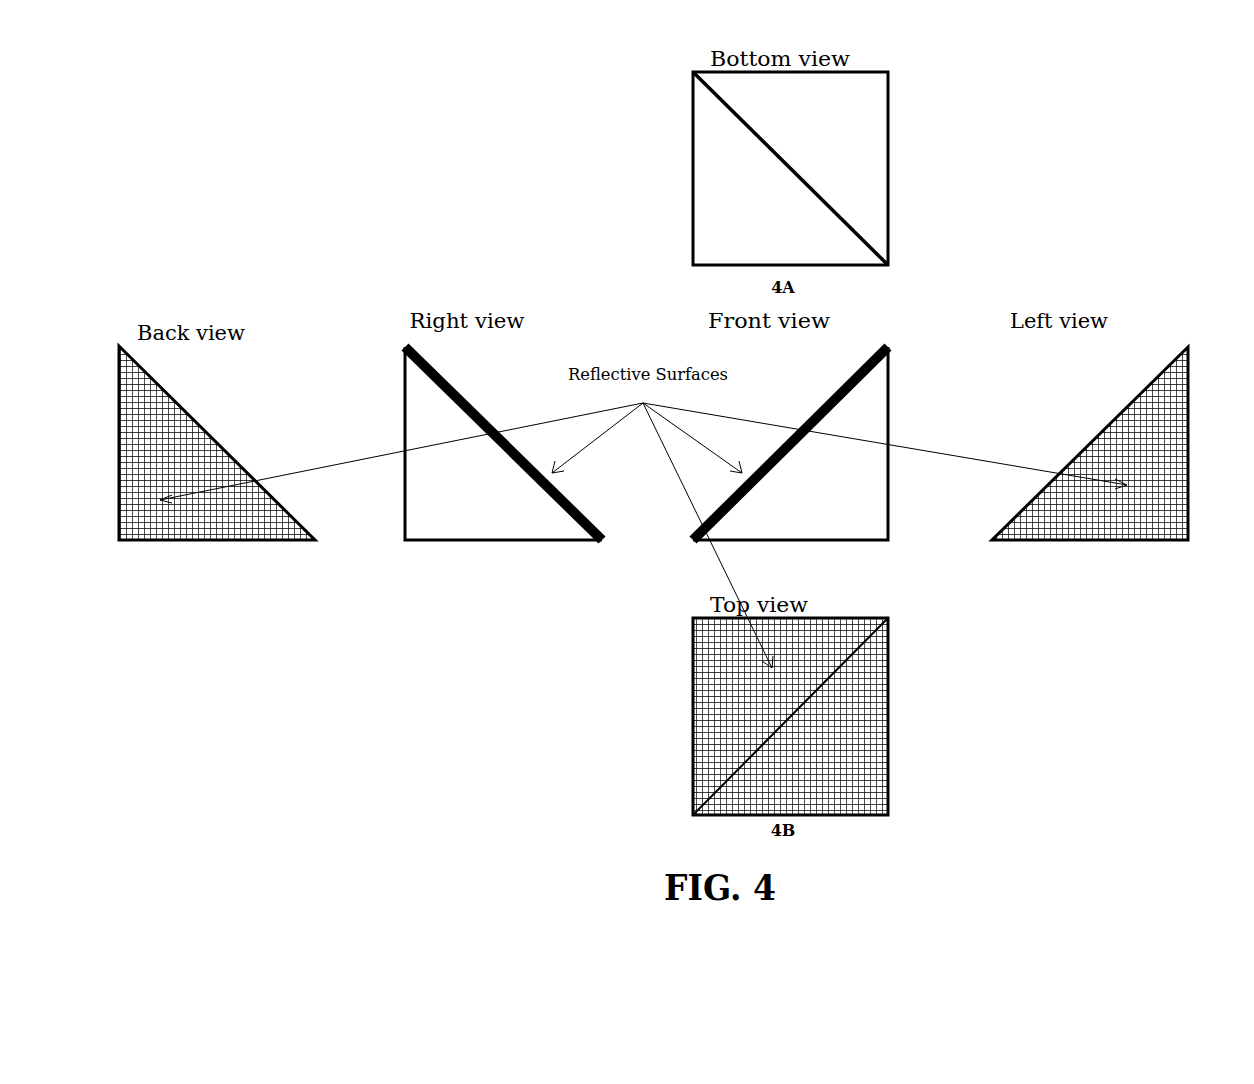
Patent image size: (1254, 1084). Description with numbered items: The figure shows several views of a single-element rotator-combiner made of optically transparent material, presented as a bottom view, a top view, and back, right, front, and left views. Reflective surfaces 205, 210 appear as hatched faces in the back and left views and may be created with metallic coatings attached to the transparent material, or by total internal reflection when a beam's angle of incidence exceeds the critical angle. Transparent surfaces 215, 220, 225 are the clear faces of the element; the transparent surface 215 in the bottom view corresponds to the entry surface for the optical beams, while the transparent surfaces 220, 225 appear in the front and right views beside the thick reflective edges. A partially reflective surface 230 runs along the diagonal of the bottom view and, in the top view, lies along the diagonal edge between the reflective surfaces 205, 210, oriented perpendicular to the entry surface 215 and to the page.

The reflective surface 205 is at (196, 532).
The reflective surface 210 is at (1108, 536).
The transparent surface 215 is at (712, 186).
The transparent surface 220 is at (843, 514).
The transparent surface 225 is at (463, 522).
The partially reflective surface 230 is at (785, 730).